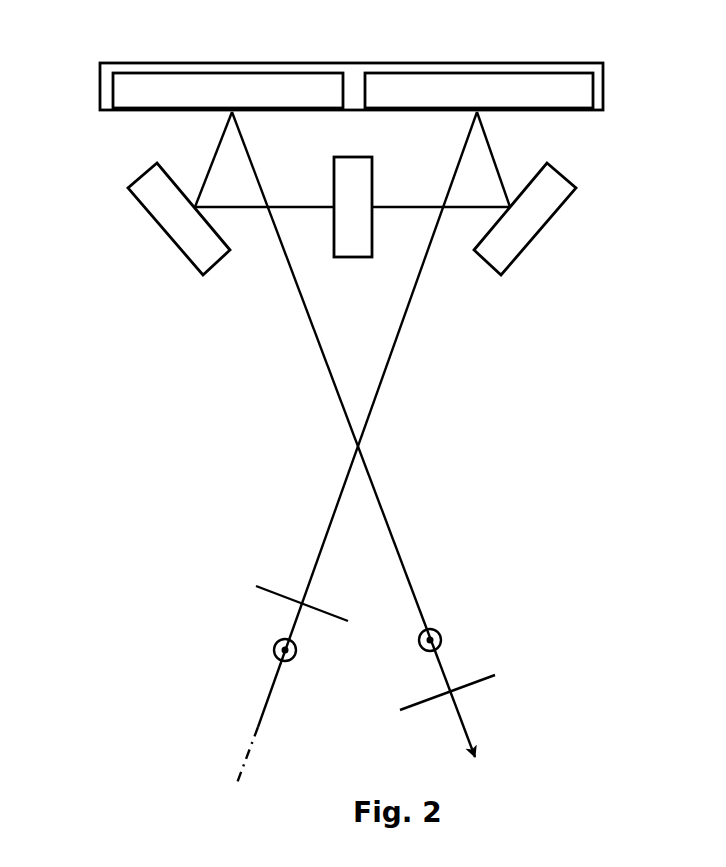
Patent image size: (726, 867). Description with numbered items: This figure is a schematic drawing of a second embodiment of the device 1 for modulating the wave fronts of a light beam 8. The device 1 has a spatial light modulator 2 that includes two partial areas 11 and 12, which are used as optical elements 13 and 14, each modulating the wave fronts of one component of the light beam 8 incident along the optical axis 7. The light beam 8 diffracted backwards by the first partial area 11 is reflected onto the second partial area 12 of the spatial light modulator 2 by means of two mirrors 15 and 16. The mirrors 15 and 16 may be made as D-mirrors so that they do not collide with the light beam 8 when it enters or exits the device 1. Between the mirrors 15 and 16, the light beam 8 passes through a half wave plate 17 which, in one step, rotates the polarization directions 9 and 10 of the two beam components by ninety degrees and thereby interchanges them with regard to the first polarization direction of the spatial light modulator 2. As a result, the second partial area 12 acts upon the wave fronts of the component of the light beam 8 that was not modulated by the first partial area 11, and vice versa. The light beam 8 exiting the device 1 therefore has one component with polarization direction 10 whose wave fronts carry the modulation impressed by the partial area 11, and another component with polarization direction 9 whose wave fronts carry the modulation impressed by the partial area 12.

The device 1 is at (595, 378).
The spatial light modulator 2 is at (608, 70).
The optical axis 7 is at (252, 750).
The light beam 8 is at (493, 145).
The polarization direction 9 is at (268, 652).
The polarization direction 10 is at (257, 582).
The first partial area 11 is at (508, 137).
The second partial area 12 is at (198, 137).
The optical element 13 is at (573, 112).
The optical element 14 is at (137, 112).
The mirror 15 is at (540, 235).
The mirror 16 is at (168, 237).
The half wave plate 17 is at (332, 236).